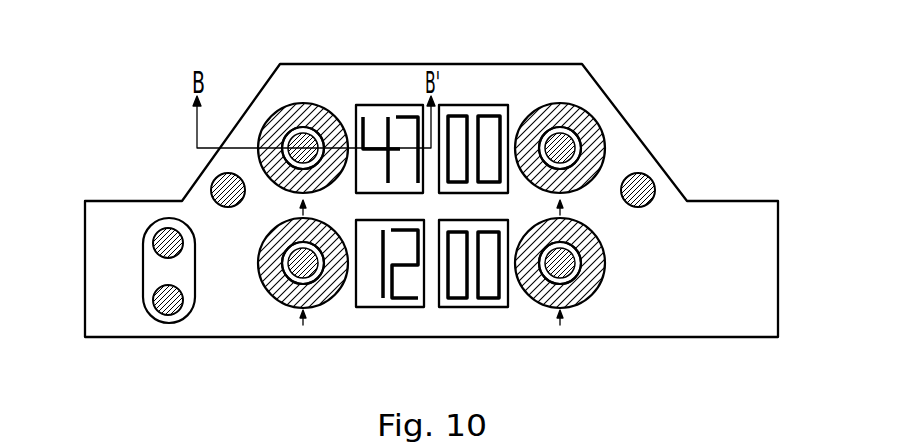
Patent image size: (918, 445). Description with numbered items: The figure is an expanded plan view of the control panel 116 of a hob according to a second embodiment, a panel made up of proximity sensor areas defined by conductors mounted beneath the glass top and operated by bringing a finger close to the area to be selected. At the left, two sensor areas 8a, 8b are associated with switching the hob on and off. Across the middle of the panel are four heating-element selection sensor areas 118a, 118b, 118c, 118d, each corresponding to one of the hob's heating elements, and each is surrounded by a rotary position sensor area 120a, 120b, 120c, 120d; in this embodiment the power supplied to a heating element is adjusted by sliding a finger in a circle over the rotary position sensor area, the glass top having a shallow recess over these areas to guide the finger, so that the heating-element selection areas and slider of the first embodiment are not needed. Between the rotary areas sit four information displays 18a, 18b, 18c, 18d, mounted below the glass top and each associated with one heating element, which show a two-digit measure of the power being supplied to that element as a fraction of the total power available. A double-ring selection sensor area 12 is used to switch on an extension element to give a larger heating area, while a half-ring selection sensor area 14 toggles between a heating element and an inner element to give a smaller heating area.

The control panel 116 is at (696, 123).
The rotary position sensor area 120a is at (272, 113).
The rotary position sensor area 120b is at (289, 306).
The rotary position sensor area 120c is at (551, 105).
The rotary position sensor area 120d is at (577, 308).
The heating-element selection sensor area 118a is at (306, 127).
The heating-element selection sensor area 118b is at (318, 279).
The heating-element selection sensor area 118c is at (581, 146).
The heating-element selection sensor area 118d is at (582, 266).
The information display 18a is at (380, 105).
The information display 18b is at (388, 308).
The information display 18c is at (465, 105).
The information display 18d is at (468, 308).
The double-ring selection sensor area 12 is at (212, 188).
The half-ring selection sensor area 14 is at (656, 192).
The proximity sensor area 8a is at (153, 293).
The proximity sensor area 8b is at (153, 237).